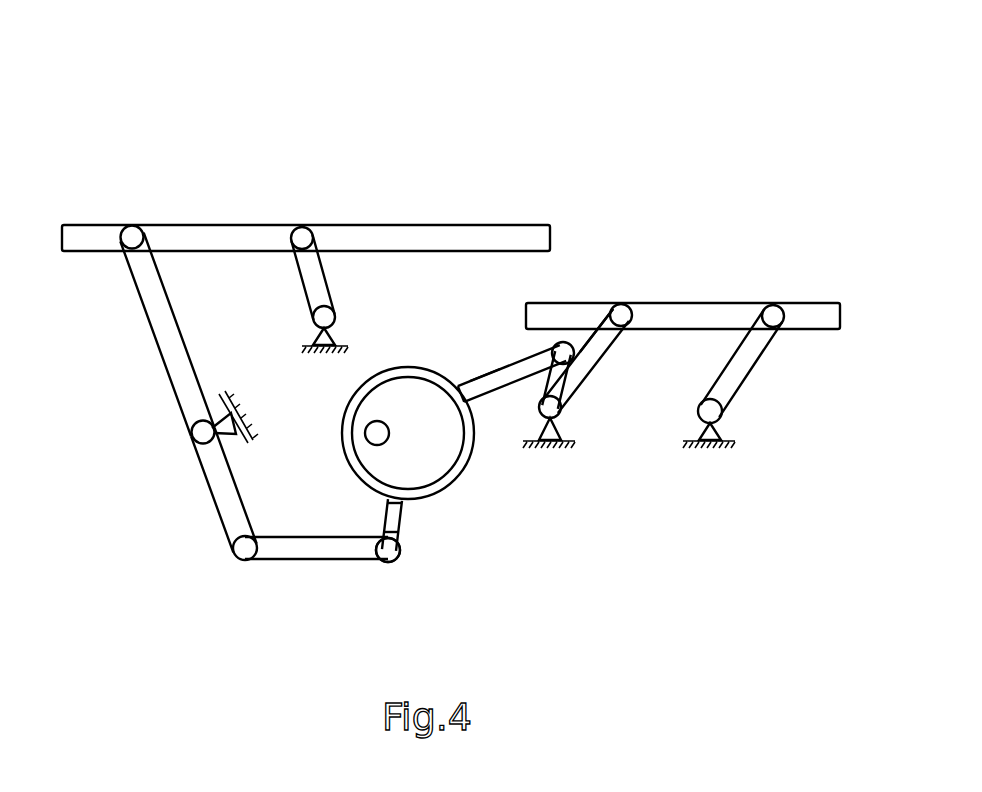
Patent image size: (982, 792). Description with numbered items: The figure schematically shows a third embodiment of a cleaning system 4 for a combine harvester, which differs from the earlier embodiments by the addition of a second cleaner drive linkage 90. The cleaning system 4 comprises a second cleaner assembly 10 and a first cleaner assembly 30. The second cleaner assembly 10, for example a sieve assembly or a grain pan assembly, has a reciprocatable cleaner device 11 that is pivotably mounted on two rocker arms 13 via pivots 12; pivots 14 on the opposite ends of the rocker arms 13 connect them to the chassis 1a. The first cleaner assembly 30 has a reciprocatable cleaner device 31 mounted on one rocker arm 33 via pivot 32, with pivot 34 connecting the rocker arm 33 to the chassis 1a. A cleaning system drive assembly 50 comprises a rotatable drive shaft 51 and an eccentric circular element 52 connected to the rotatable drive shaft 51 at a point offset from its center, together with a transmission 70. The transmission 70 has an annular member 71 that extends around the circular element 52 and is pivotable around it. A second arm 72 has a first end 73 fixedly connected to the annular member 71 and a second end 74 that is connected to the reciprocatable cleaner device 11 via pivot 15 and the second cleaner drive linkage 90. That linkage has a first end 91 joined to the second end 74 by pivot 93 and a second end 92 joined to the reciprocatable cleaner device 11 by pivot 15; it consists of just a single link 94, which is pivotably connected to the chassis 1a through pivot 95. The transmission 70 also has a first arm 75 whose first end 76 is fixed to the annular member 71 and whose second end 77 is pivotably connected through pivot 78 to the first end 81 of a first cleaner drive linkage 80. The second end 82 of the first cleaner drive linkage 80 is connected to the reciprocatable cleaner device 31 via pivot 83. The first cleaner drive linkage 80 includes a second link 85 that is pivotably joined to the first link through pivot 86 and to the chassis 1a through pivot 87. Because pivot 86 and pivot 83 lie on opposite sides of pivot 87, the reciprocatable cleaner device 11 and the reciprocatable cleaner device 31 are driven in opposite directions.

The cleaning system 4 is at (544, 100).
The second cleaner assembly 10 is at (762, 236).
The reciprocatable cleaner device 11 is at (829, 303).
The pivots 12 is at (778, 304).
The rocker arms 13 is at (757, 359).
The pivots 14 is at (724, 414).
The pivot 15 is at (627, 305).
The chassis 1a is at (324, 347).
The first cleaner assembly 30 is at (245, 150).
The reciprocatable cleaner device 31 is at (370, 228).
The pivot 32 is at (303, 227).
The rocker arm 33 is at (320, 276).
The pivot 34 is at (336, 315).
The cleaning system drive assembly 50 is at (537, 606).
The rotatable drive shaft 51 is at (364, 433).
The circular element 52 is at (426, 402).
The transmission 70 is at (181, 605).
The annular member 71 is at (463, 470).
The second arm 72 is at (517, 375).
The first end 73 is at (478, 410).
The second end 74 is at (520, 352).
The first arm 75 is at (402, 523).
The first end 76 is at (388, 503).
The second end 77 is at (386, 532).
The pivot 78 is at (403, 545).
The first cleaner drive linkage 80 is at (320, 594).
The first end 81 is at (373, 562).
The second end 82 is at (133, 263).
The pivot 83 is at (133, 227).
The second link 85 is at (173, 352).
The pivot 86 is at (247, 561).
The pivot 87 is at (191, 434).
The second cleaner drive linkage 90 is at (609, 480).
The first end 91 is at (571, 368).
The second end 92 is at (612, 332).
The pivot 93 is at (569, 337).
The single link 94 is at (591, 368).
The pivot 95 is at (561, 417).